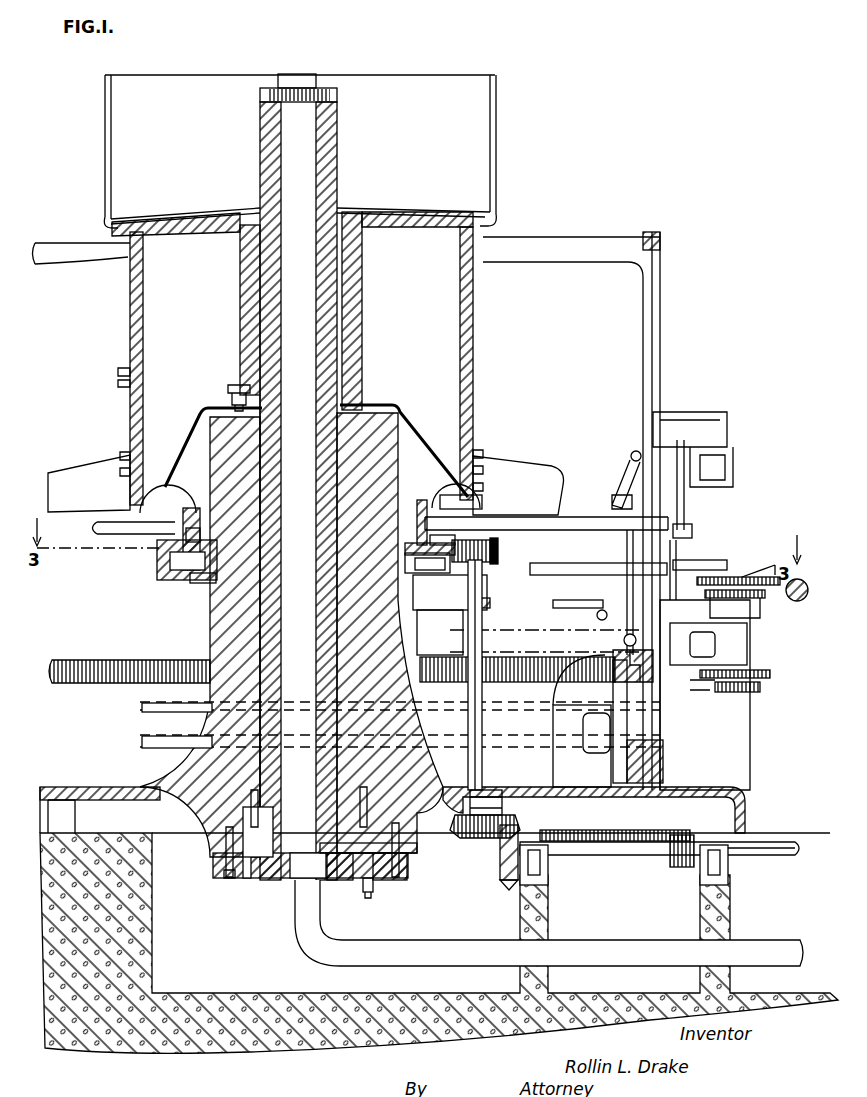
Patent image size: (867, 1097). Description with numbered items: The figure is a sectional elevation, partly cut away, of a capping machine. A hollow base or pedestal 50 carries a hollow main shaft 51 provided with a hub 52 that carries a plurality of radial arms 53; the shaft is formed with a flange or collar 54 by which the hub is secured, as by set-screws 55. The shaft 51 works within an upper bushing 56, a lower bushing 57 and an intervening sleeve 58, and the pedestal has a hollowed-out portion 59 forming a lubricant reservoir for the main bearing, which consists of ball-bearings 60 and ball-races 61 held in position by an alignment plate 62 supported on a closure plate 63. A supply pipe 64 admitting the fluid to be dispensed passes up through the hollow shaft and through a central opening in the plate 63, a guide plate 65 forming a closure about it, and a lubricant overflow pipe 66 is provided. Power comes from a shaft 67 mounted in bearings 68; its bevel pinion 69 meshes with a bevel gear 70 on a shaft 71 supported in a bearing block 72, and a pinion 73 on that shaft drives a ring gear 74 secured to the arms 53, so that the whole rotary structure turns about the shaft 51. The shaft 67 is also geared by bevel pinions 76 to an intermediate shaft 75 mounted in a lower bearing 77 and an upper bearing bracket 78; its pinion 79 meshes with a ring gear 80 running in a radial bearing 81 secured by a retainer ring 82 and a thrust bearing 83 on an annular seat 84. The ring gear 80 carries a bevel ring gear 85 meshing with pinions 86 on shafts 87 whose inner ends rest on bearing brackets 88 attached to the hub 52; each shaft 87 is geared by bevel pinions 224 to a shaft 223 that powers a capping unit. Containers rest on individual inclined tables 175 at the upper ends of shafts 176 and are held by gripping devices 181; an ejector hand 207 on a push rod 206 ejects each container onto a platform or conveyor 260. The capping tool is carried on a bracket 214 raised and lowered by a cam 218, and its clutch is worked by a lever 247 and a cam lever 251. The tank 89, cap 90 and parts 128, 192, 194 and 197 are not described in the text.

The hollow base 50 is at (165, 778).
The shaft 51 is at (272, 622).
The hub 52 is at (250, 343).
The radial arms 53 is at (527, 262).
The flange or collar 54 is at (357, 393).
The set-screws 55 is at (237, 390).
The upper bushing 56 is at (250, 452).
The lower bushing 57 is at (180, 805).
The intervening sleeve 58 is at (240, 585).
The hollowed-out portion 59 is at (245, 888).
The ball-bearings 60 is at (252, 874).
The ball-races 61 is at (370, 898).
The alignment plate 62 is at (360, 885).
The closure plate 63 is at (410, 870).
The supply pipe 64 is at (298, 917).
The guide plate 65 is at (290, 882).
The lubricant overflow pipe 66 is at (417, 850).
The power shaft 67 is at (790, 855).
The bearings 68 is at (548, 862).
The bevel pinion 69 is at (677, 867).
The bevel gear 70 is at (568, 833).
The shaft 71 is at (640, 720).
The bearing block 72 is at (560, 755).
The pinion 73 is at (568, 688).
The ring gear 74 is at (83, 684).
The intermediate shaft 75 is at (478, 719).
The bevel pinions 76 is at (505, 855).
The lower bearing 77 is at (502, 810).
The upper bearing bracket 78 is at (485, 605).
The pinion 79 is at (497, 548).
The ring gear 80 is at (425, 552).
The radial bearing 81 is at (190, 568).
The retainer ring 82 is at (412, 520).
The thrust bearing 83 is at (200, 580).
The annular seat 84 is at (190, 578).
The bevel ring gear 85 is at (188, 532).
The pinions 86 is at (205, 512).
The shafts 87 is at (97, 530).
The bearing brackets 88 is at (182, 495).
The tank 89 is at (496, 130).
The cap 90 is at (339, 97).
The rod 128 is at (148, 710).
The cam 218 is at (140, 744).
The tables 175 is at (778, 563).
The shafts 176 is at (748, 650).
The gripping devices 181 is at (738, 580).
The rod 192 is at (553, 606).
The gear 194 is at (760, 692).
The plate 197 is at (770, 675).
The push rod 206 is at (672, 575).
The ejector hand 207 is at (706, 567).
The bracket 214 is at (688, 416).
The shaft 223 is at (686, 512).
The bevel pinions 224 is at (692, 529).
The lever 247 is at (618, 490).
The cam lever 251 is at (626, 588).
The platform or conveyor 260 is at (790, 600).